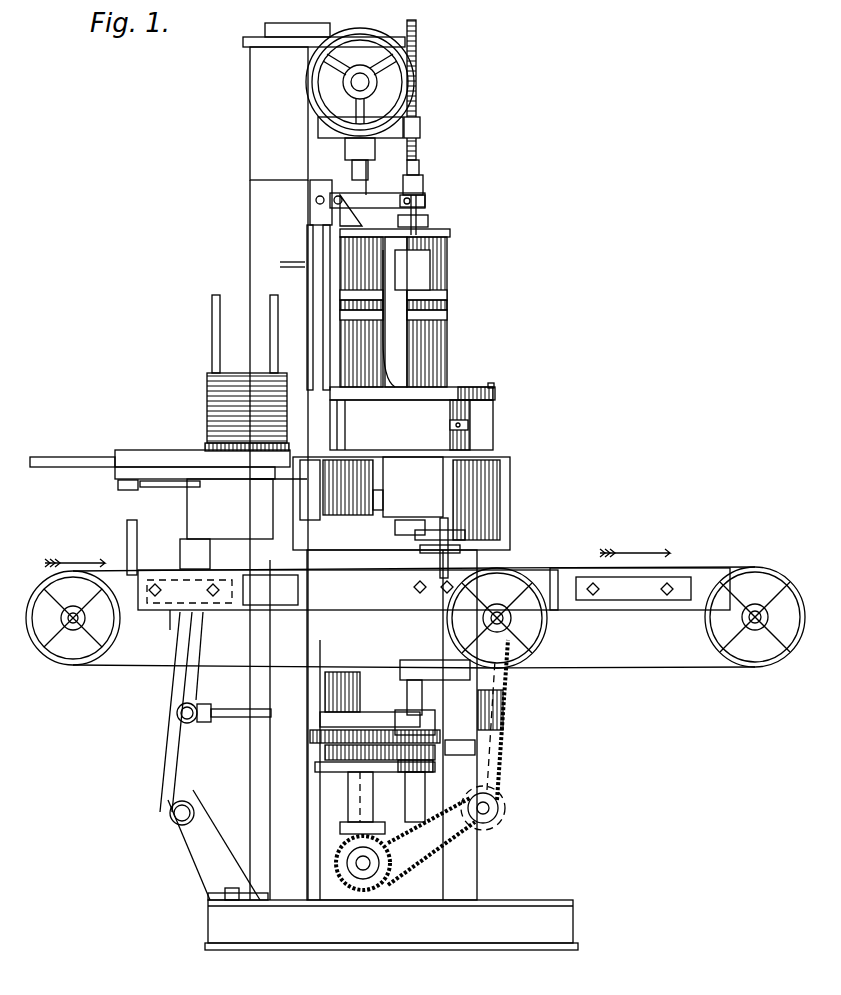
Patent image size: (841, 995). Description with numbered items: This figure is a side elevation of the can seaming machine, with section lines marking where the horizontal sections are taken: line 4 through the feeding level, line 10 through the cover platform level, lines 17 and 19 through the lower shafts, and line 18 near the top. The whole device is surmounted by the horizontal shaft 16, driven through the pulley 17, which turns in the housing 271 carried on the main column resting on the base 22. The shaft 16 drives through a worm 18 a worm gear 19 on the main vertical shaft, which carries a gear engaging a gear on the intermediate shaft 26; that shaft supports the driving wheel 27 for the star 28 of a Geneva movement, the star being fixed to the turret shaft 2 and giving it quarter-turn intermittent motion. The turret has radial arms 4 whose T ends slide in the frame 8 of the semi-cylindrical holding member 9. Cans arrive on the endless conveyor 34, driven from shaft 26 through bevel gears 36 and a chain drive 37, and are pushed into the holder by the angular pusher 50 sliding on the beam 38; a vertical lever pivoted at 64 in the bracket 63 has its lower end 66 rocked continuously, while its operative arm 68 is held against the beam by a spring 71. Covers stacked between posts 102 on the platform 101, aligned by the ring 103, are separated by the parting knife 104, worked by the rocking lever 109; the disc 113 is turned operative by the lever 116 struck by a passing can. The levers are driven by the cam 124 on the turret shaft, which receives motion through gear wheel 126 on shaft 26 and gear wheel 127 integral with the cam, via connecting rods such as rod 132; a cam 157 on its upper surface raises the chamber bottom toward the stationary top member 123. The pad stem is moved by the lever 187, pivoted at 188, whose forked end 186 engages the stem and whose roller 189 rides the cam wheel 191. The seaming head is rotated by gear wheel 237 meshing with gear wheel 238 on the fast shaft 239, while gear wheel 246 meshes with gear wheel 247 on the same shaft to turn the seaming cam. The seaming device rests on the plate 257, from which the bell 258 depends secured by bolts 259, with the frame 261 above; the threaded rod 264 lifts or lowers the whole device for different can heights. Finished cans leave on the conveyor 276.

The turret shaft 2 is at (415, 845).
The arms 4 is at (310, 228).
The frame 8 is at (372, 496).
The holding member 9 is at (325, 482).
The section line 10 is at (290, 436).
The horizontal shaft 16 is at (368, 80).
The pulley 17 is at (550, 727).
The worm 18 is at (305, 183).
The worm gear 19 is at (530, 745).
The base 22 is at (430, 935).
The shaft 26 is at (350, 796).
The driving wheel 27 is at (310, 764).
The star 28 is at (408, 778).
The endless conveyor 34 is at (105, 667).
The bevel gears 36 is at (345, 832).
The chain drive 37 is at (497, 800).
The beam 38 is at (458, 549).
The angular pusher 50 is at (410, 518).
The bracket 63 is at (420, 603).
The pivot 64 is at (425, 661).
The lower end 66 is at (410, 690).
The operative arm 68 is at (466, 535).
The spring 71 is at (497, 611).
The platform 101 is at (202, 464).
The posts 102 is at (212, 348).
The ring 103 is at (205, 438).
The parting knife 104 is at (70, 468).
The rocking lever 109 is at (145, 705).
The disc 113 is at (133, 490).
The lever 116 is at (175, 487).
The top member 123 is at (411, 425).
The cam 124 is at (500, 705).
The gear wheel 126 is at (312, 738).
The gear wheel 127 is at (475, 742).
The connecting rod 132 is at (240, 710).
The cam 157 is at (358, 675).
The forked end 186 is at (418, 200).
The lever 187 is at (378, 200).
The pivot 188 is at (332, 204).
The roller 189 is at (314, 200).
The cam wheel 191 is at (318, 193).
The gear wheel 237 is at (430, 298).
The gear wheel 238 is at (345, 295).
The shaft 239 is at (360, 178).
The gear wheel 246 is at (445, 320).
The gear wheel 247 is at (343, 320).
The plate 257 is at (468, 387).
The bell 258 is at (462, 420).
The bolts 259 is at (493, 386).
The frame 261 is at (433, 358).
The rod 264 is at (416, 155).
The housing 271 is at (256, 95).
The conveyor 276 is at (685, 568).